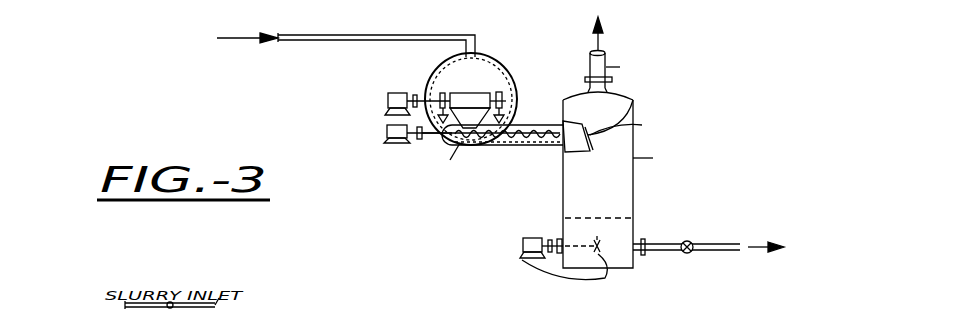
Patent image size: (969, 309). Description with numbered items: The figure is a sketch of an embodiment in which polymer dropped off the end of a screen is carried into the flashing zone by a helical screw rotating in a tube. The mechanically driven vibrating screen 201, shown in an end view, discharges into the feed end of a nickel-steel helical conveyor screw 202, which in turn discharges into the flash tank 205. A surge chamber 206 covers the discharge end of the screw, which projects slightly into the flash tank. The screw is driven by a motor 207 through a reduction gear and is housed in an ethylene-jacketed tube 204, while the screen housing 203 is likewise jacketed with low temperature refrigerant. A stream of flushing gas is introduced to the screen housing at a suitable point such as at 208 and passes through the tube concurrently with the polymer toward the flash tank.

The vibrating screen 201 is at (483, 95).
The helical conveyor screw 202 is at (532, 142).
The screen housing 203 is at (490, 66).
The ethylene-jacketed tube 204 is at (508, 124).
The flash tank 205 is at (640, 207).
The surge chamber 206 is at (633, 100).
The motor 207 is at (387, 133).
The flushing gas inlet point 208 is at (433, 41).